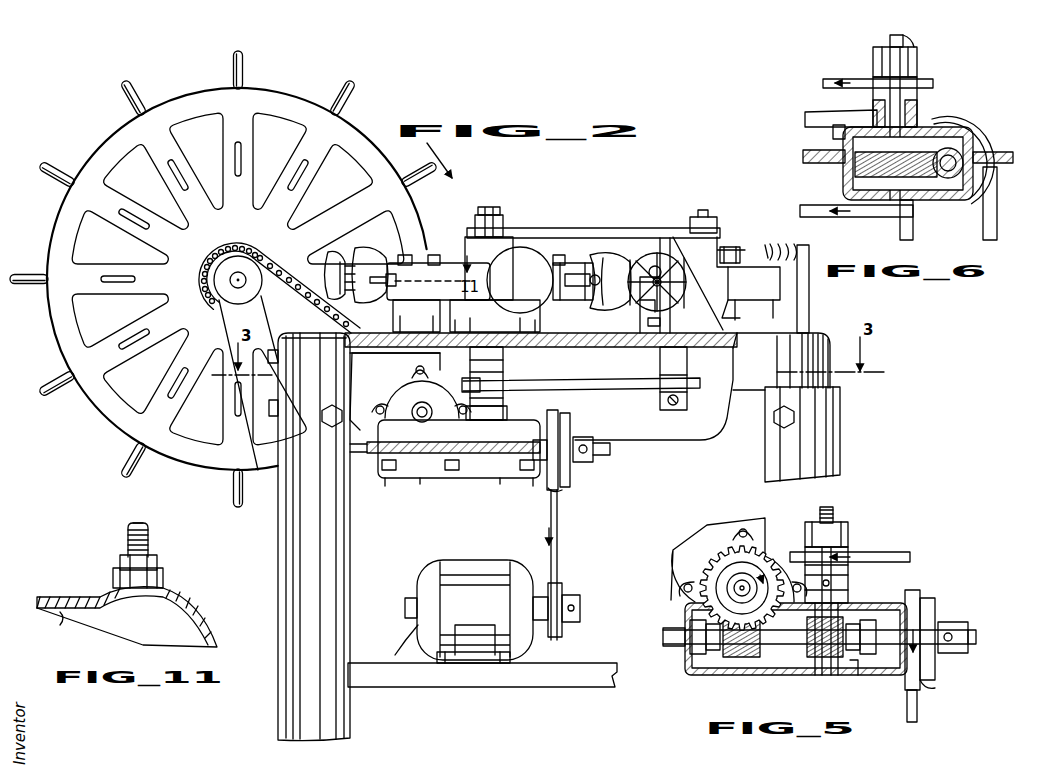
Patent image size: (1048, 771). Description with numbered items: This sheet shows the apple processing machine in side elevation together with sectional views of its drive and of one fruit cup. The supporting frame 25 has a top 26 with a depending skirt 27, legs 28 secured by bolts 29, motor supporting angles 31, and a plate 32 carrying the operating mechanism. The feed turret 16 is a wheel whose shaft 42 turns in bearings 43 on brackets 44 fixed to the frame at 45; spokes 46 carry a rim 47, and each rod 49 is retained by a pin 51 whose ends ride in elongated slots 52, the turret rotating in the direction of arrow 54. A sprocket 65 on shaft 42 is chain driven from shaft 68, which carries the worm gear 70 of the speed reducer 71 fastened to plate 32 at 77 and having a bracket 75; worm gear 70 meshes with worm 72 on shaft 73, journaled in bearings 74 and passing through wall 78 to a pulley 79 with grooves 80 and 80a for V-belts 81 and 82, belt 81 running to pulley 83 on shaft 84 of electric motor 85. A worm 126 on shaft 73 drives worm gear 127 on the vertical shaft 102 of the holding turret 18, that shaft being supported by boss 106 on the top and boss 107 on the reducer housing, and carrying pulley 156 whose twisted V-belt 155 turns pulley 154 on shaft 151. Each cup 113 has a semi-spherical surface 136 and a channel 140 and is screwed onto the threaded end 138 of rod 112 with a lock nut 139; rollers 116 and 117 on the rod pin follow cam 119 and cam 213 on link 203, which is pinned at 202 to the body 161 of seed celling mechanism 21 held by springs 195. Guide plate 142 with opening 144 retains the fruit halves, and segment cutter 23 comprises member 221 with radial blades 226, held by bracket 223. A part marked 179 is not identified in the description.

In FIG. 2, the feed turret 16 is at (220, 274).
In FIG. 2, the circular rim 47 is at (275, 108).
In FIG. 2, the rod 49 is at (232, 71).
In FIG. 2, the spokes 46 is at (167, 167).
In FIG. 2, the pin 51 is at (233, 157).
In FIG. 2, the elongated slots 52 is at (140, 218).
In FIG. 2, the bearings 43 is at (226, 262).
In FIG. 2, the shaft 42 is at (230, 280).
In FIG. 2, the brackets 44 is at (235, 307).
In FIG. 2, the bracket fastening 45 is at (268, 398).
In FIG. 2, the sprocket 65 is at (262, 268).
In FIG. 2, the frame 25 is at (283, 508).
In FIG. 2, the legs 28 is at (345, 530).
In FIG. 2, the bolts 29 is at (333, 428).
In FIG. 2, the top 26 is at (778, 333).
In FIG. 2, the skirt 27 is at (710, 420).
In FIG. 2, the fruit holding turret 18 is at (440, 262).
In FIG. 2, the shaft 102 is at (490, 210).
In FIG. 5, the shaft 102 is at (833, 512).
In FIG. 6, the shaft 102 is at (892, 36).
In FIG. 2, the roller 117 is at (430, 264).
In FIG. 2, the cup 113 is at (372, 262).
In FIG. 11, the cup 113 is at (196, 607).
In FIG. 2, the rod 112 is at (398, 284).
In FIG. 11, the rod 112 is at (155, 512).
In FIG. 2, the roller 116 is at (400, 308).
In FIG. 2, the cam 119 is at (500, 327).
In FIG. 2, the cam 213 is at (548, 263).
In FIG. 2, the link 203 is at (670, 228).
In FIG. 2, the segment cutter 23 is at (652, 245).
In FIG. 2, the guide plate 142 is at (630, 252).
In FIG. 2, the blades 226 is at (668, 273).
In FIG. 2, the elongated opening 144 is at (660, 302).
In FIG. 2, the body member 221 is at (663, 323).
In FIG. 2, the pin 202 is at (703, 215).
In FIG. 2, the nut 179 is at (732, 247).
In FIG. 2, the seed celling mechanism 21 is at (745, 265).
In FIG. 2, the body 161 is at (768, 289).
In FIG. 2, the bracket 223 is at (730, 316).
In FIG. 2, the springs 195 is at (792, 238).
In FIG. 2, the bracket 75 is at (380, 369).
In FIG. 5, the bracket 75 is at (722, 530).
In FIG. 2, the shaft 68 is at (398, 400).
In FIG. 5, the shaft 68 is at (740, 586).
In FIG. 2, the plate 32 is at (478, 460).
In FIG. 5, the plate 32 is at (668, 645).
In FIG. 6, the plate 32 is at (803, 152).
In FIG. 2, the speed reducer 71 is at (500, 480).
In FIG. 5, the speed reducer 71 is at (682, 614).
In FIG. 6, the speed reducer 71 is at (822, 170).
In FIG. 2, the fastening 77 is at (452, 470).
In FIG. 2, the boss 106 is at (505, 359).
In FIG. 5, the boss 106 is at (848, 533).
In FIG. 6, the boss 106 is at (917, 56).
In FIG. 2, the boss 107 is at (510, 402).
In FIG. 5, the boss 107 is at (848, 590).
In FIG. 6, the boss 107 is at (915, 120).
In FIG. 2, the pulley 156 is at (482, 382).
In FIG. 2, the twisted V-belt 155 is at (608, 380).
In FIG. 2, the pulley 154 is at (687, 380).
In FIG. 2, the shaft 151 is at (673, 410).
In FIG. 2, the pulley 79 is at (572, 482).
In FIG. 2, the shaft 73 is at (612, 450).
In FIG. 5, the shaft 73 is at (976, 638).
In FIG. 6, the shaft 73 is at (965, 175).
In FIG. 2, the V-belt 82 is at (562, 492).
In FIG. 5, the V-belt 82 is at (935, 688).
In FIG. 6, the V-belt 82 is at (833, 112).
In FIG. 2, the V-belt 81 is at (548, 530).
In FIG. 5, the V-belt 81 is at (917, 710).
In FIG. 6, the V-belt 81 is at (983, 230).
In FIG. 2, the electric motor 85 is at (488, 603).
In FIG. 2, the pulley 83 is at (563, 585).
In FIG. 2, the motor shaft 84 is at (580, 605).
In FIG. 2, the motor supporting angles 31 is at (518, 683).
In FIG. 2, the arrow 54 is at (445, 168).
In FIG. 5, the bearings 74 is at (690, 648).
In FIG. 5, the worm 72 is at (745, 660).
In FIG. 5, the worm 126 is at (820, 660).
In FIG. 6, the worm 126 is at (960, 150).
In FIG. 5, the worm gear 127 is at (856, 680).
In FIG. 6, the worm gear 127 is at (862, 180).
In FIG. 5, the worm gear 70 is at (755, 575).
In FIG. 5, the wall 78 is at (905, 590).
In FIG. 5, the groove 80 is at (922, 600).
In FIG. 5, the groove 80a is at (935, 610).
In FIG. 11, the threaded end 138 is at (128, 542).
In FIG. 11, the lock nut 139 is at (160, 562).
In FIG. 11, the semi-spherical surface 136 is at (168, 598).
In FIG. 11, the channel 140 is at (66, 620).